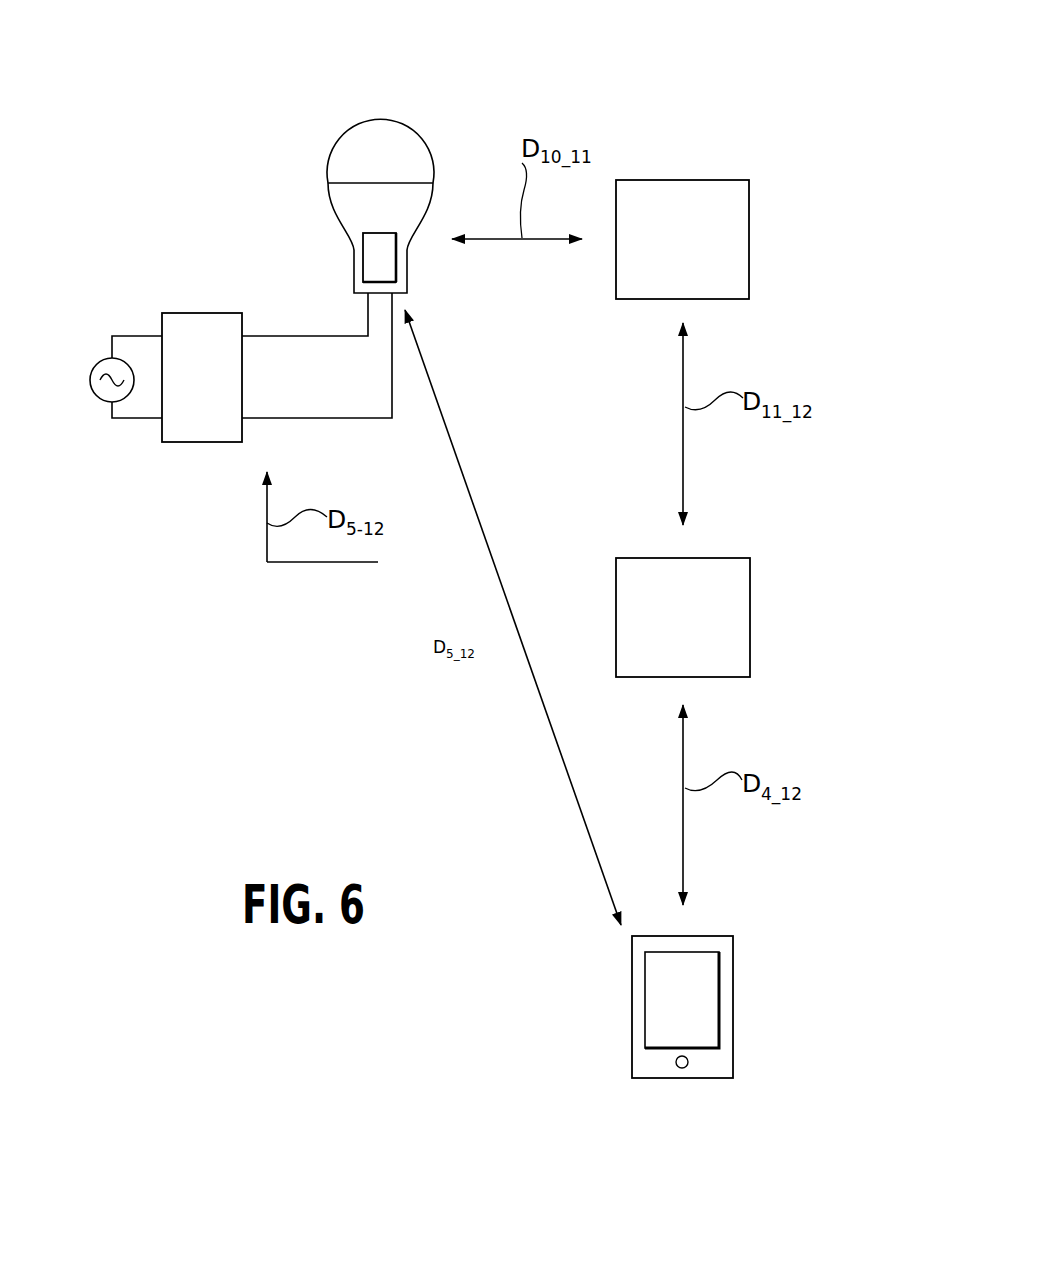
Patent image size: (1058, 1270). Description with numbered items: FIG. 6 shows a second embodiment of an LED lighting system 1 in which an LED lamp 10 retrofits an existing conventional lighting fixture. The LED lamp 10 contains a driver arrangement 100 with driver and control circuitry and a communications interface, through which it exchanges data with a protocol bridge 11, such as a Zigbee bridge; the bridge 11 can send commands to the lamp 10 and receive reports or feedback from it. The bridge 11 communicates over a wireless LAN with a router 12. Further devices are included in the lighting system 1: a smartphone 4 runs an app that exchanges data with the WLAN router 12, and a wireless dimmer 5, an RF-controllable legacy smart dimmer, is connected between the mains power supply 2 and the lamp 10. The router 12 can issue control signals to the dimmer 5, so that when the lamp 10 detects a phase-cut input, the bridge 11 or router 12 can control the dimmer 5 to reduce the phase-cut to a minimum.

The LED lighting system 1 is at (611, 92).
The mains power supply 2 is at (90, 368).
The smartphone 4 is at (712, 936).
The wireless dimmer 5 is at (206, 313).
The LED lamp 10 is at (333, 196).
The protocol bridge 11 is at (708, 180).
The router 12 is at (713, 558).
The driver arrangement 100 is at (398, 272).